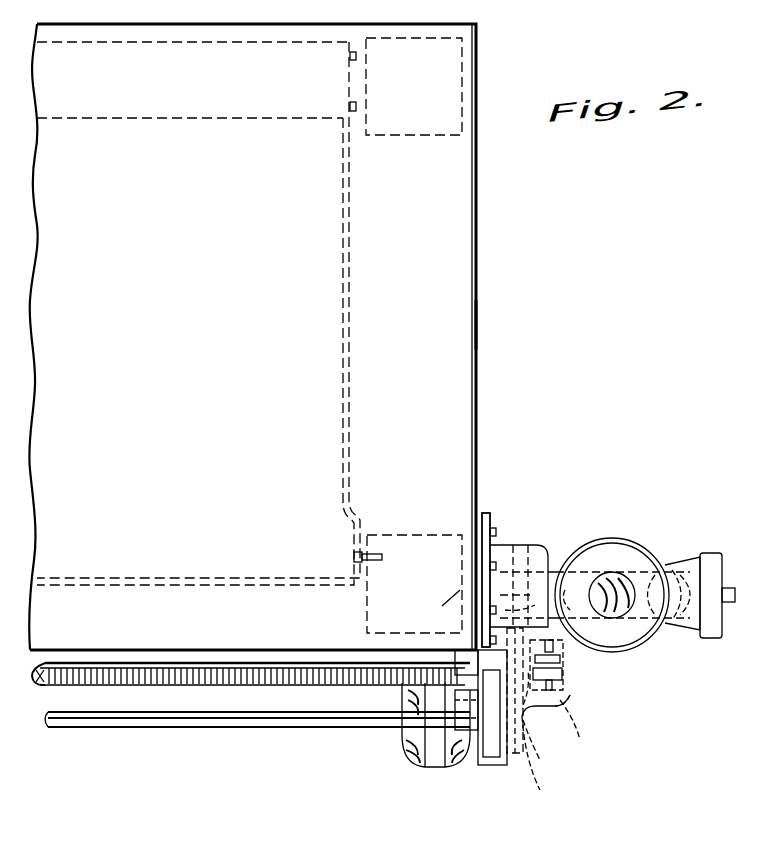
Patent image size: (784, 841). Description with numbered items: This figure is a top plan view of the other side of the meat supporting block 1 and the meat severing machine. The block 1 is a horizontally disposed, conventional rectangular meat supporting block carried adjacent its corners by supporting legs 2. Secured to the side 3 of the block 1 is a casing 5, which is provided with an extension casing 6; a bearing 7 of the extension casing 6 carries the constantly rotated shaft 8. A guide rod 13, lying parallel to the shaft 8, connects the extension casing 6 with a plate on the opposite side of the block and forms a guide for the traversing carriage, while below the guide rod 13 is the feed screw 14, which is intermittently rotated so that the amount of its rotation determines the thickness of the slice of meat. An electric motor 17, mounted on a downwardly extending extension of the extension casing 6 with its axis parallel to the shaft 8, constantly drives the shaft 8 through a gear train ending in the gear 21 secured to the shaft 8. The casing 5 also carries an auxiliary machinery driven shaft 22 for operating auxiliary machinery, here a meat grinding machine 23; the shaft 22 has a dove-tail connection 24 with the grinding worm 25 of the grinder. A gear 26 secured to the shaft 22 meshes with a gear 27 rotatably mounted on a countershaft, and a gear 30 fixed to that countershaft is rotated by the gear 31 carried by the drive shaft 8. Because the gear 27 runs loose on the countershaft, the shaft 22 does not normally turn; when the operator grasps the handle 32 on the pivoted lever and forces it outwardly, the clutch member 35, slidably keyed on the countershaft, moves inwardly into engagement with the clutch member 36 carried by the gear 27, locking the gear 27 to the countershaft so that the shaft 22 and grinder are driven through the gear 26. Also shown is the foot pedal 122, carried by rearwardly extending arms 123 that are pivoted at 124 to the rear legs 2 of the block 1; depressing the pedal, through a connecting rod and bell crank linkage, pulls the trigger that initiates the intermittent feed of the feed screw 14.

The meat supporting block 1 is at (252, 337).
The supporting legs 2 is at (420, 135).
The side of the block 3 is at (478, 325).
The casing 5 is at (520, 545).
The extension casing 6 is at (495, 762).
The bearing 7 is at (432, 760).
The constantly rotated shaft 8 is at (210, 728).
The guide rod 13 is at (138, 663).
The feed screw 14 is at (28, 690).
The electric motor 17 is at (402, 755).
The gear 21 is at (505, 767).
The auxiliary machinery driven shaft 22 is at (500, 545).
The meat grinding machine 23 is at (640, 560).
The dove-tail connection 24 is at (610, 580).
The grinding worm 25 is at (622, 605).
The gear 26 is at (588, 575).
The gear 27 is at (628, 663).
The gear 30 is at (531, 612).
The gear 31 is at (543, 760).
The handle 32 is at (560, 665).
The clutch member 35 is at (572, 698).
The clutch member 36 is at (530, 715).
The foot pedal 122 is at (207, 118).
The rearwardly extending arms 123 is at (352, 302).
The pivot 124 is at (355, 556).